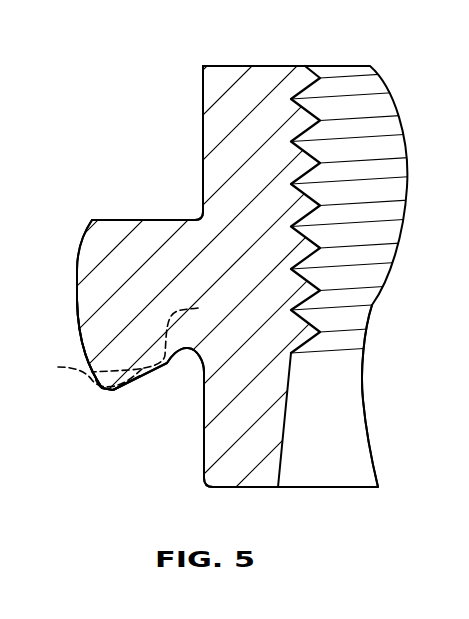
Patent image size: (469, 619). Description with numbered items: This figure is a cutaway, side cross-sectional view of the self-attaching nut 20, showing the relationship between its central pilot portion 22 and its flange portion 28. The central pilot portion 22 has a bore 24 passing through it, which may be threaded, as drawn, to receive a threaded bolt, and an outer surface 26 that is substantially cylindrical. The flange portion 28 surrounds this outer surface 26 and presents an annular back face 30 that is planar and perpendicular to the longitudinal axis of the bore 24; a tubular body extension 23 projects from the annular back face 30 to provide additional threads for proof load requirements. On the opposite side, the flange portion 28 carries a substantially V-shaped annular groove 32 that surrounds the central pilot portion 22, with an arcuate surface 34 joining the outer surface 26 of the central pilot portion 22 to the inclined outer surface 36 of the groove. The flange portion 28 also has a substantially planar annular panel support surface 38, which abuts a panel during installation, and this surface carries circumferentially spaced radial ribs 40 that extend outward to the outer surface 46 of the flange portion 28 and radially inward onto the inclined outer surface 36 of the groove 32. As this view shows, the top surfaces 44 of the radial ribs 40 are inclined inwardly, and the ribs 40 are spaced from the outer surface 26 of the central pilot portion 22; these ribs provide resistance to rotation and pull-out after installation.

The self-attaching nut 20 is at (188, 42).
The central pilot portion 22 is at (191, 456).
The tubular body extension 23 is at (191, 118).
The bore 24 is at (342, 447).
The outer surface 26 is at (203, 405).
The flange portion 28 is at (130, 254).
The annular back face 30 is at (138, 220).
The V-shaped annular groove 32 is at (155, 404).
The arcuate surface 34 is at (206, 378).
The inclined outer surface 36 is at (198, 308).
The annular panel support surface 38 is at (86, 371).
The radial ribs 40 is at (103, 404).
The top surface 44 is at (113, 391).
The outer surface 46 is at (77, 301).